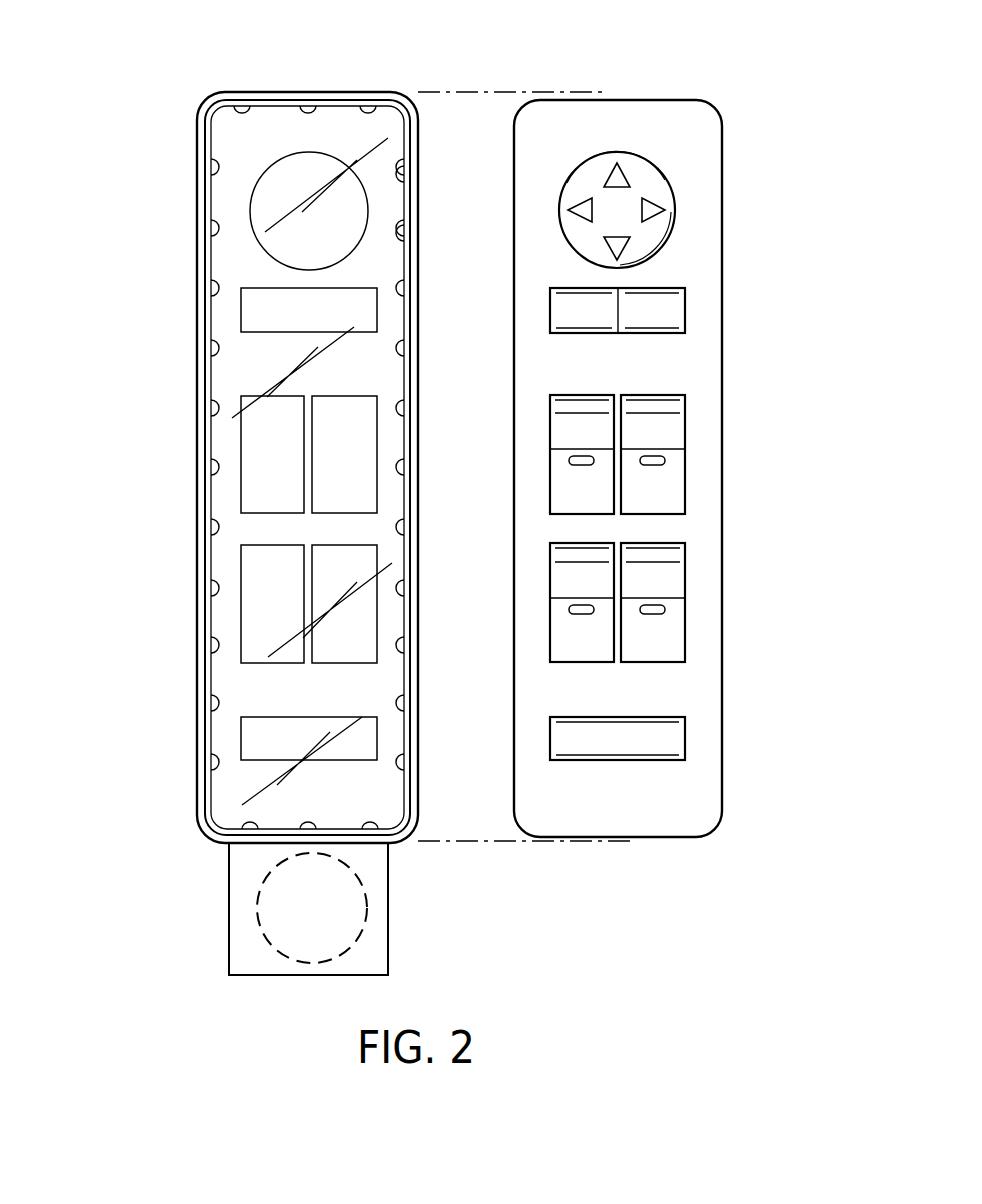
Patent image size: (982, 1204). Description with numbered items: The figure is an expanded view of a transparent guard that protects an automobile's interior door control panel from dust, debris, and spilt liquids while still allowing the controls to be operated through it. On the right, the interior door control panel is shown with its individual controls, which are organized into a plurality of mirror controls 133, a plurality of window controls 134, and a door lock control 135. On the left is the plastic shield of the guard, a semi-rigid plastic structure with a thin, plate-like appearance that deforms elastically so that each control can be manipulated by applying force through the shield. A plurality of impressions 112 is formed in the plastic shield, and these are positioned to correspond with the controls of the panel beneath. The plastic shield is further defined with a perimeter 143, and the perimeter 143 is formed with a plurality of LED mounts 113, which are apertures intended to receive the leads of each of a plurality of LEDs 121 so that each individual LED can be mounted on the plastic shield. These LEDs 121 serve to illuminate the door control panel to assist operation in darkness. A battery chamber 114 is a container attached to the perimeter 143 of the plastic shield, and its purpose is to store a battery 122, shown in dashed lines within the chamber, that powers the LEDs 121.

The impressions 112 is at (263, 735).
The LED mounts 113 is at (407, 233).
The battery chamber 114 is at (247, 955).
The LEDs 121 is at (370, 826).
The battery 122 is at (288, 898).
The mirror controls 133 is at (653, 290).
The window controls 134 is at (658, 636).
The door lock control 135 is at (670, 742).
The perimeter 143 is at (418, 790).